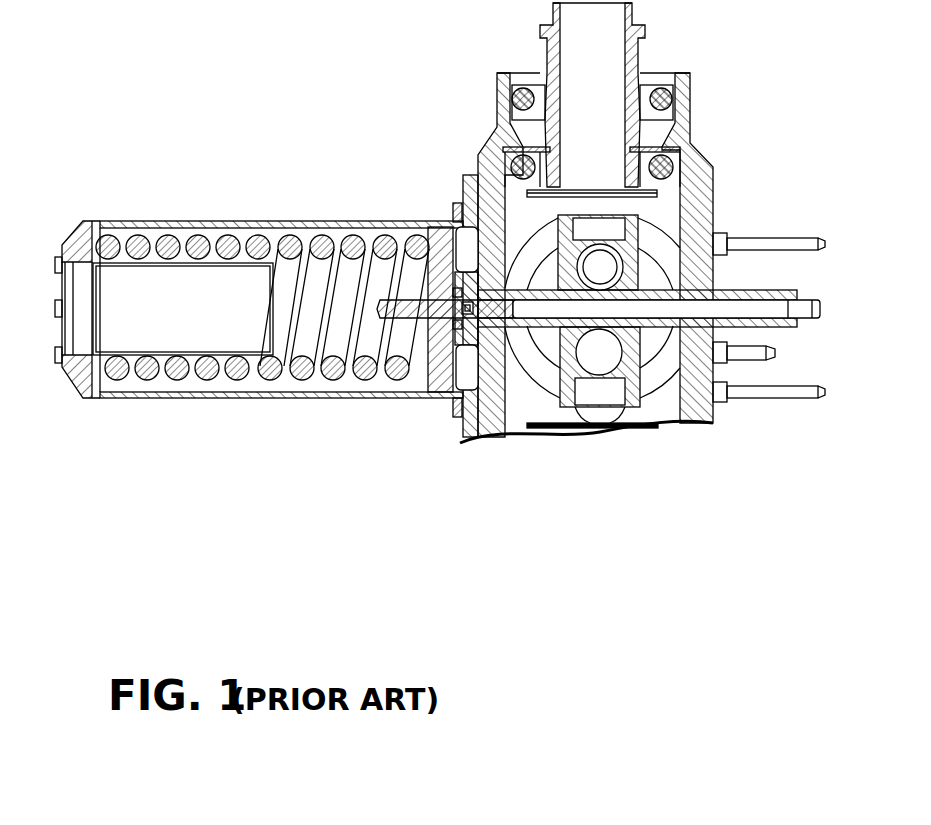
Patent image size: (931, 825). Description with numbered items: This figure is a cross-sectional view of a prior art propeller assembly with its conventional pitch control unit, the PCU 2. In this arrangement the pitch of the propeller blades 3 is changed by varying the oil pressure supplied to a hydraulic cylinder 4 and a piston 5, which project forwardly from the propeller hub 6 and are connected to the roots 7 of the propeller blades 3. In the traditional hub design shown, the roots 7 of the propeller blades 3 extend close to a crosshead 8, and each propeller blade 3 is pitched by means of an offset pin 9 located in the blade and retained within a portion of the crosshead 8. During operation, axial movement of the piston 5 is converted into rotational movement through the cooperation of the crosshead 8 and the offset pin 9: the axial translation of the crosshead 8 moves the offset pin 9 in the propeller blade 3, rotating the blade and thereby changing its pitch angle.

The PCU 2 is at (648, 336).
The propeller blade 3 is at (640, 48).
The hydraulic cylinder 4 is at (252, 222).
The piston 5 is at (443, 225).
The propeller hub 6 is at (493, 142).
The root 7 is at (613, 190).
The crosshead 8 is at (640, 225).
The offset pin 9 is at (625, 212).